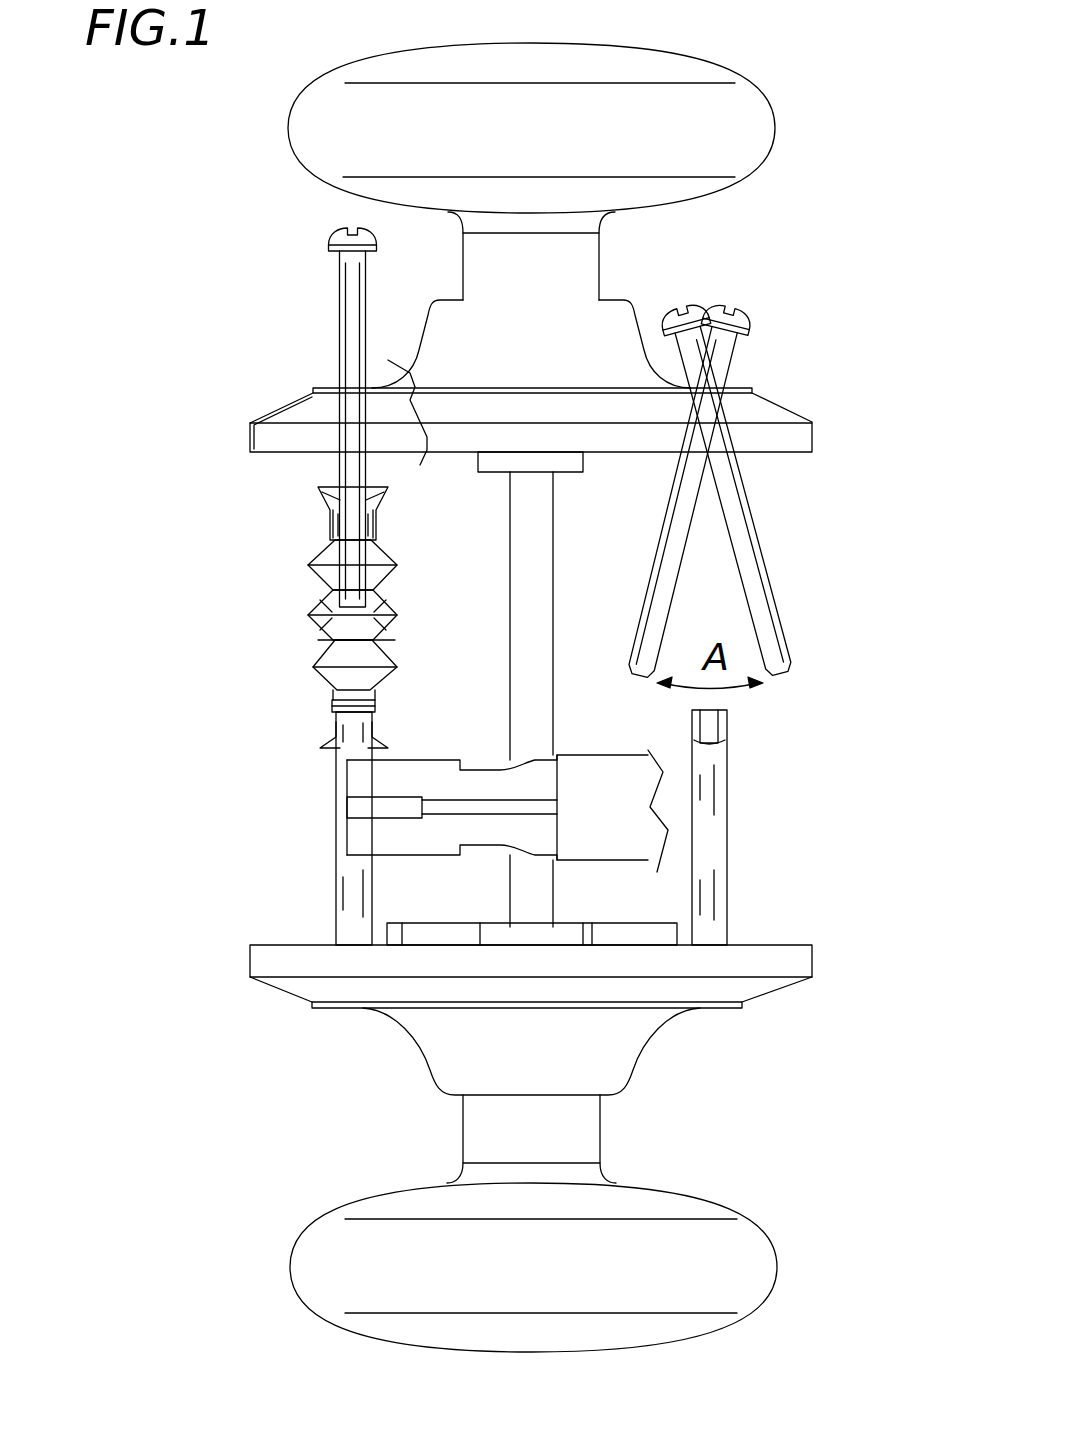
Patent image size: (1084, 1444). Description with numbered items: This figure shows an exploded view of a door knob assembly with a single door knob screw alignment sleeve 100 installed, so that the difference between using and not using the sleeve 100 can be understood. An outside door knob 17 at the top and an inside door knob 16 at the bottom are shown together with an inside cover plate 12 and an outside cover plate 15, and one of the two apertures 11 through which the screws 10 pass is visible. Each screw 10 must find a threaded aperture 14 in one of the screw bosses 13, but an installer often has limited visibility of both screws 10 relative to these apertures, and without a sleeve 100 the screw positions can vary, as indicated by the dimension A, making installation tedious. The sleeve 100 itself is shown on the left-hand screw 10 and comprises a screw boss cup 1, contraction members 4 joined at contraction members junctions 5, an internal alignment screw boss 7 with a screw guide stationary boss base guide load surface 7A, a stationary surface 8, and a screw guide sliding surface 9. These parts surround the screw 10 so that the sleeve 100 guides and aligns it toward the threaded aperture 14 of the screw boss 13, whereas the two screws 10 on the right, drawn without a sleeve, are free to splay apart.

The screw boss cup 1 is at (330, 737).
The contraction members 4 is at (323, 553).
The contraction members junctions 5 is at (380, 637).
The internal alignment screw boss 7 is at (330, 717).
The screw guide stationary boss base guide load surface 7A is at (372, 708).
The stationary surface 8 is at (337, 532).
The screw guide sliding surface 9 is at (337, 595).
The screws 10 is at (340, 292).
The apertures 11 is at (340, 390).
The inside cover plate 12 is at (253, 423).
The screw bosses 13 is at (337, 880).
The threaded apertures 14 is at (730, 728).
The outside cover plate 15 is at (290, 987).
The inside door knob 16 is at (338, 1210).
The outside door knob 17 is at (318, 164).
The door knob screw alignment sleeve 100 is at (296, 491).